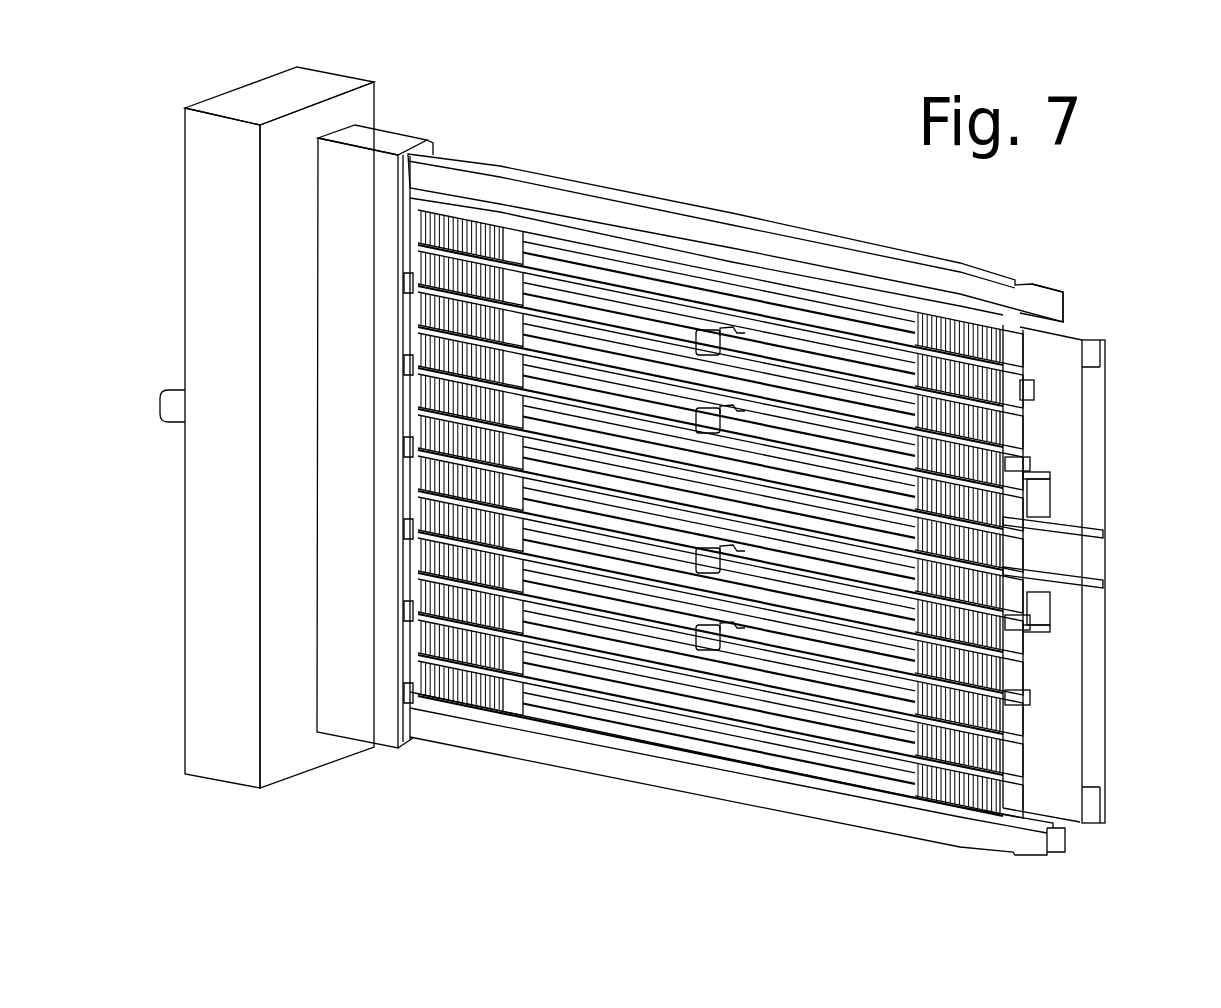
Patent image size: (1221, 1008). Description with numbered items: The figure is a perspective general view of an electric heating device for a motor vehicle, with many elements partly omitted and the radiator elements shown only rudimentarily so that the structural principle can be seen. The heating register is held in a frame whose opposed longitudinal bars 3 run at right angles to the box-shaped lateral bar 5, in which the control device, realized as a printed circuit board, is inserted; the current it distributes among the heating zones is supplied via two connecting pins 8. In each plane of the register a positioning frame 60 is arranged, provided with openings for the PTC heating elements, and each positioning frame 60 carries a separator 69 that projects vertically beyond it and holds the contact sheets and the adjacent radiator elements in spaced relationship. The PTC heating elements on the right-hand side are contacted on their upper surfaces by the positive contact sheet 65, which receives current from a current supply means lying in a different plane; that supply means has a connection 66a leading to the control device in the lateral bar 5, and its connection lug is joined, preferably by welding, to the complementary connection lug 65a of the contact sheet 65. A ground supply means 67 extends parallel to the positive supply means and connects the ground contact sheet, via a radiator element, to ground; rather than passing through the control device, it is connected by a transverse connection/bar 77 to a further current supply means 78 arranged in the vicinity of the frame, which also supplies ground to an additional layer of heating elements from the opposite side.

The longitudinal bars 3 is at (553, 197).
The lateral bar 5 is at (213, 108).
The connecting pins 8 is at (170, 407).
The positioning frame 60 is at (1030, 380).
The contact sheet 65 is at (1050, 475).
The connection lug 65a is at (1040, 501).
The connection 66a is at (1040, 604).
The ground supply means 67 is at (1103, 582).
The separator 69 is at (708, 340).
The transverse connection/bar 77 is at (1097, 407).
The current supply means 78 is at (1065, 323).